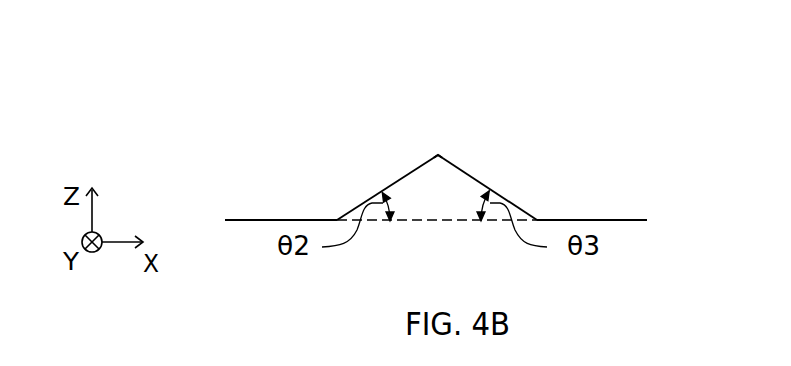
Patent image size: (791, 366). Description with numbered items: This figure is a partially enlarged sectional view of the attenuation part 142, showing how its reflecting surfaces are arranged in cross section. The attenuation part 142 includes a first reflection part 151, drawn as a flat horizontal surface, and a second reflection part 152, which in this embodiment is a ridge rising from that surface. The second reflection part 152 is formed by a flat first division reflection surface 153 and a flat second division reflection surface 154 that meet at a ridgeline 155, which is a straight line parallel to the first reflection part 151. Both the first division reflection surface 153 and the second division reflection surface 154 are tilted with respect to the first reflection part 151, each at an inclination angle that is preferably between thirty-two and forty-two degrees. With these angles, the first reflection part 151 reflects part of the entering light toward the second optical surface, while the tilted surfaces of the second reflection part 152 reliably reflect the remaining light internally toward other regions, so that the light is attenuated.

The attenuation part 142 is at (684, 36).
The first reflection part 151 is at (301, 220).
The second reflection part 152 is at (517, 116).
The first division reflection surface 153 is at (412, 172).
The second division reflection surface 154 is at (472, 172).
The ridgeline 155 is at (438, 155).